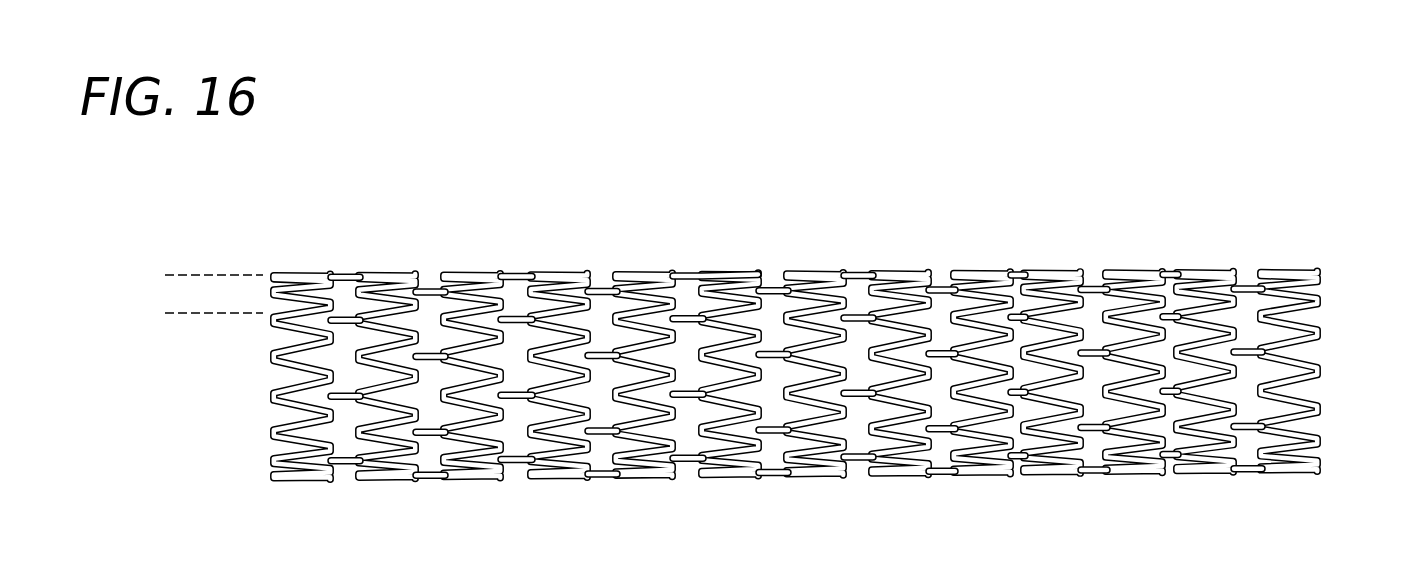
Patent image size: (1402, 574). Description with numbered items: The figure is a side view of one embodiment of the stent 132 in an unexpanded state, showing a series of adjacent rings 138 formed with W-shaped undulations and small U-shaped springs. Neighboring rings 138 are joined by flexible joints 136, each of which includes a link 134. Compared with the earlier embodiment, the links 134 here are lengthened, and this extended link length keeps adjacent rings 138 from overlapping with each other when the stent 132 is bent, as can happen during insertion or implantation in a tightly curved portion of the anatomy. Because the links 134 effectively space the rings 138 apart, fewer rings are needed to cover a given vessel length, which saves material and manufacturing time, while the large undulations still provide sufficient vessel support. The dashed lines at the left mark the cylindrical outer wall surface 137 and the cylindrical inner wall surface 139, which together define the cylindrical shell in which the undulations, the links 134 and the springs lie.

The stent 132 is at (321, 257).
The link 134 is at (428, 292).
The flexible joint 136 is at (1273, 428).
The cylindrical outer wall surface 137 is at (207, 275).
The ring 138 is at (800, 272).
The cylindrical inner wall surface 139 is at (218, 316).